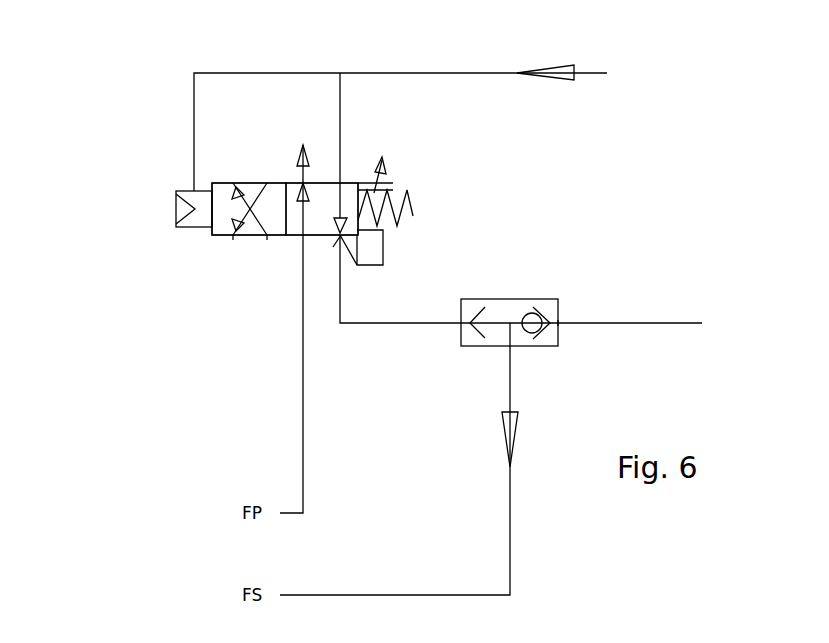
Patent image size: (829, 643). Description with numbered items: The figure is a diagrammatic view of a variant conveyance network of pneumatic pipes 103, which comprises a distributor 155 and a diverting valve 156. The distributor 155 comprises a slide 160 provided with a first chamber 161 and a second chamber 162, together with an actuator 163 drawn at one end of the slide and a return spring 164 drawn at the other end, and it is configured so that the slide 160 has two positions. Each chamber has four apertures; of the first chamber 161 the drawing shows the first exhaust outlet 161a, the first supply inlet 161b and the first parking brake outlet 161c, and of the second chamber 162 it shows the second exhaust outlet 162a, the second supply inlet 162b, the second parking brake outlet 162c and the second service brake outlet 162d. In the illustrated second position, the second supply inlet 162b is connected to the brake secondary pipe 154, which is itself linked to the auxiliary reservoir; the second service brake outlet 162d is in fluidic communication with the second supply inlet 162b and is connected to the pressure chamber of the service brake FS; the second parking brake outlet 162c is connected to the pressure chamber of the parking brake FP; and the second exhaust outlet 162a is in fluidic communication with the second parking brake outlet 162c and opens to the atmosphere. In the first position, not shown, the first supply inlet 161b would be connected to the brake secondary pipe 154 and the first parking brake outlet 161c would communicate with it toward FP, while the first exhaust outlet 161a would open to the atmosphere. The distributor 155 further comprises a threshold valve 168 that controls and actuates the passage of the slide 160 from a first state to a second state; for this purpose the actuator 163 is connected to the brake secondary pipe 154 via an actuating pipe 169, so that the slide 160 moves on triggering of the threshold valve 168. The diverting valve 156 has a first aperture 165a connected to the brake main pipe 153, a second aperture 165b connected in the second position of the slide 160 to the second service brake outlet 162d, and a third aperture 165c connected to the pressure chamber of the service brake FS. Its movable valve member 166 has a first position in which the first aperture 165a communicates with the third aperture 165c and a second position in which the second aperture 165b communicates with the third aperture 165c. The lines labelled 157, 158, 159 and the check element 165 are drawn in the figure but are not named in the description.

The conveyance network of pneumatic pipes 103 is at (703, 121).
The brake main pipe 153 is at (637, 323).
The brake secondary pipe 154 is at (465, 73).
The distributor 155 is at (130, 124).
The diverting valve 156 is at (507, 299).
The return line to FS 157 is at (510, 525).
The line to FP 158 is at (303, 410).
The connecting line 159 is at (395, 323).
The slide 160 is at (211, 238).
The first chamber 161 is at (220, 183).
The first exhaust outlet 161a is at (232, 183).
The first supply inlet 161b is at (265, 183).
The first parking brake outlet 161c is at (232, 237).
The second chamber 162 is at (290, 238).
The second exhaust outlet 162a is at (310, 160).
The second supply inlet 162b is at (345, 181).
The second parking brake outlet 162c is at (300, 245).
The second service brake outlet 162d is at (330, 262).
The actuator 163 is at (175, 206).
The return spring 164 is at (413, 208).
The check valve 165 is at (553, 299).
The first aperture 165a is at (560, 327).
The second aperture 165b is at (460, 325).
The third aperture 165c is at (507, 346).
The movable valve member 166 is at (531, 345).
The threshold valve 168 is at (392, 175).
The actuating pipe 169 is at (217, 73).